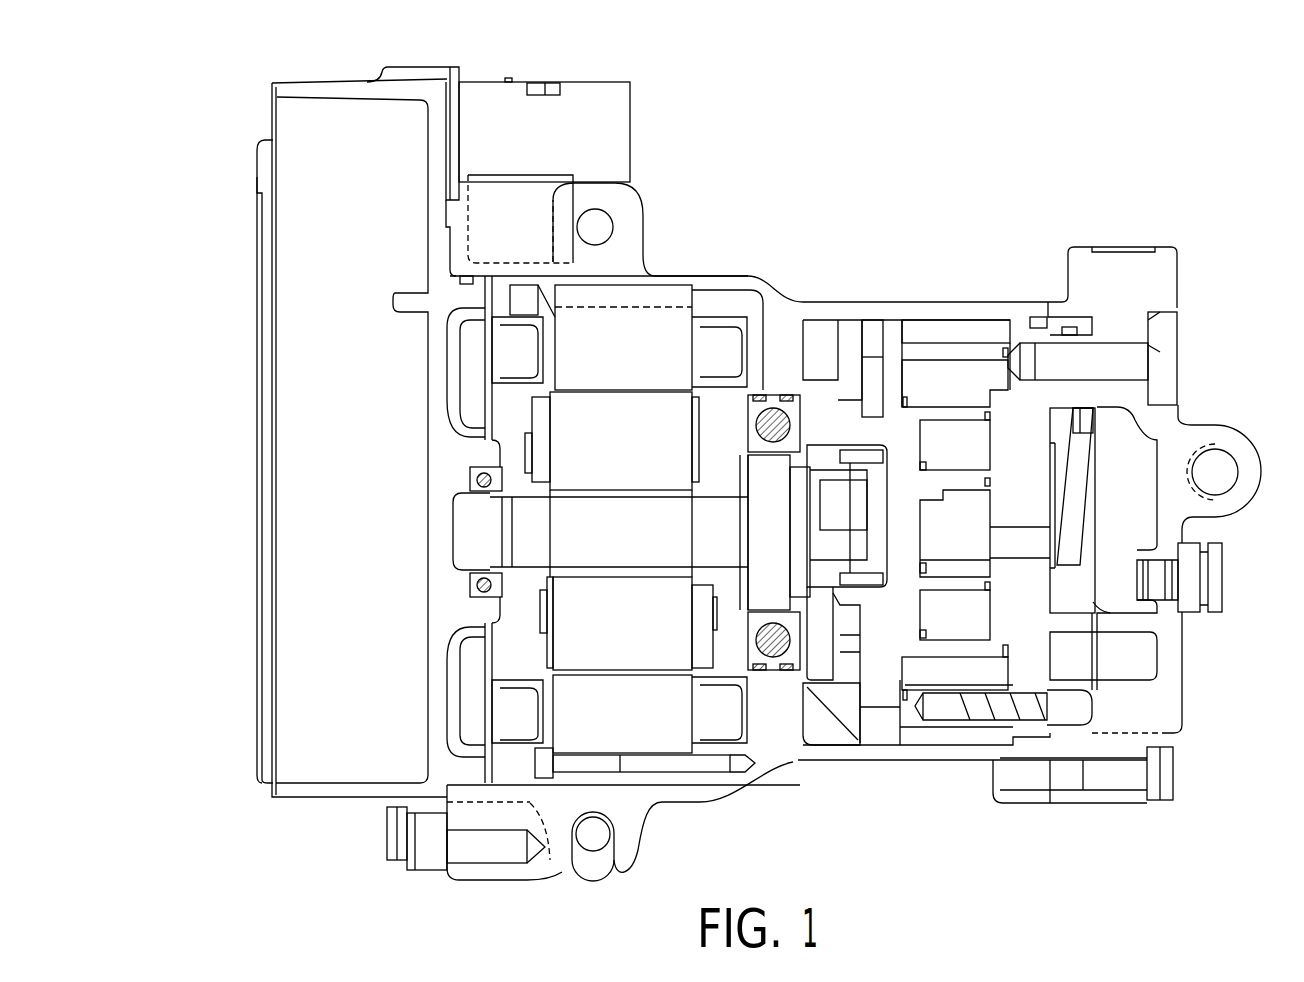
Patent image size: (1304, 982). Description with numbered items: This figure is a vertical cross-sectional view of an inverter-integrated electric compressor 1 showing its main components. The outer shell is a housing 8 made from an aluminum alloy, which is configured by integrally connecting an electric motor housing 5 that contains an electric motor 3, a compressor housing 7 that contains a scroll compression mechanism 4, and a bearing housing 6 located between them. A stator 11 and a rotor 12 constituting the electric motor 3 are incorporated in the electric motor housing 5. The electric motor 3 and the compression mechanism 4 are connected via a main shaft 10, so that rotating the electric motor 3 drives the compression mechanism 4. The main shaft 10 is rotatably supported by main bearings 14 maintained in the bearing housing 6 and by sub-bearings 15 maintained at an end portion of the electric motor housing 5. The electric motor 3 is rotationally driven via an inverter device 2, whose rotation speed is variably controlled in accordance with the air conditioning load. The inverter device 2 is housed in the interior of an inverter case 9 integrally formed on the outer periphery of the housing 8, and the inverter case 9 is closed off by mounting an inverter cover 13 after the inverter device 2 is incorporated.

The inverter-integrated electric compressor 1 is at (688, 128).
The inverter device 2 is at (298, 770).
The electric motor 3 is at (699, 722).
The compression mechanism 4 is at (1118, 708).
The electric motor housing 5 is at (708, 268).
The bearing housing 6 is at (870, 440).
The compressor housing 7 is at (1008, 428).
The housing 8 is at (998, 175).
The inverter case 9 is at (304, 92).
The main shaft 10 is at (647, 560).
The stator 11 is at (657, 302).
The rotor 12 is at (648, 420).
The inverter cover 13 is at (257, 438).
The main bearings 14 is at (774, 397).
The sub-bearings 15 is at (470, 482).